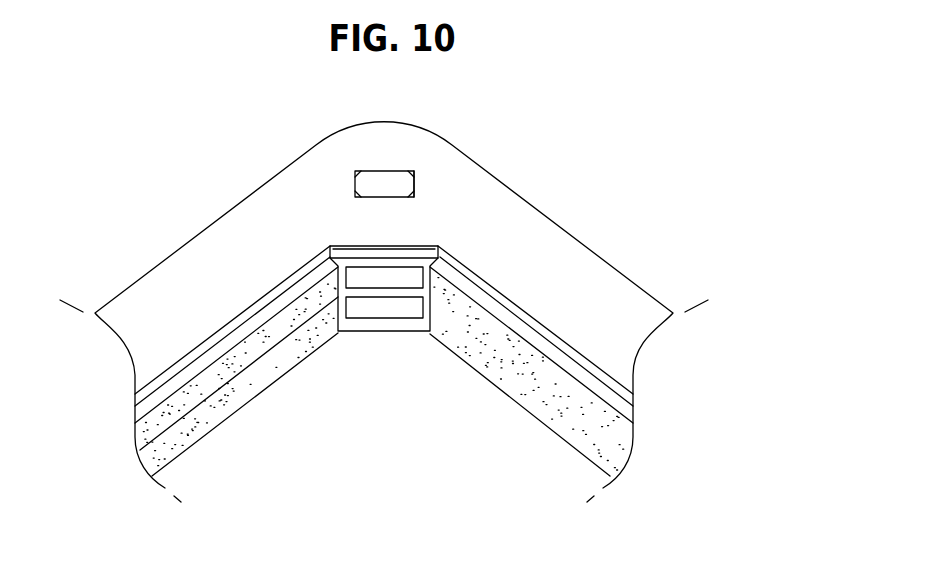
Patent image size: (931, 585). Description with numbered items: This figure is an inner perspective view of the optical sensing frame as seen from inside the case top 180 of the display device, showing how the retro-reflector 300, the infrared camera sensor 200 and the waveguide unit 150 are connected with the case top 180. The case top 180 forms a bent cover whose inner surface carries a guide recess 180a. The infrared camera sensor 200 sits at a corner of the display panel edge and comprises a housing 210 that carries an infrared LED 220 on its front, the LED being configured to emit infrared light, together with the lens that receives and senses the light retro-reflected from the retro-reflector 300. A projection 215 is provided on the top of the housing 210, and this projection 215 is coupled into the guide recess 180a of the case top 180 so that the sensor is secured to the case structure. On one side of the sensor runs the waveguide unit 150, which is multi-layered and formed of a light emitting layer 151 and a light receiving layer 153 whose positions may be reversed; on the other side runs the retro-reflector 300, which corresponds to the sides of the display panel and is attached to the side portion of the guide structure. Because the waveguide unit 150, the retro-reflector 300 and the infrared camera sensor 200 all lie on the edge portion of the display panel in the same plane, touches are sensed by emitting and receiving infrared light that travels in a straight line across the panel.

The case top 180 is at (513, 227).
The guide recess 180a is at (414, 169).
The projection 215 is at (385, 180).
The infrared camera sensor 200 is at (379, 341).
The housing 210 is at (415, 274).
The infrared LED 220 is at (417, 320).
The waveguide unit 150 is at (236, 381).
The light emitting layer 151 is at (240, 357).
The light receiving layer 153 is at (288, 355).
The retro-reflector 300 is at (532, 388).